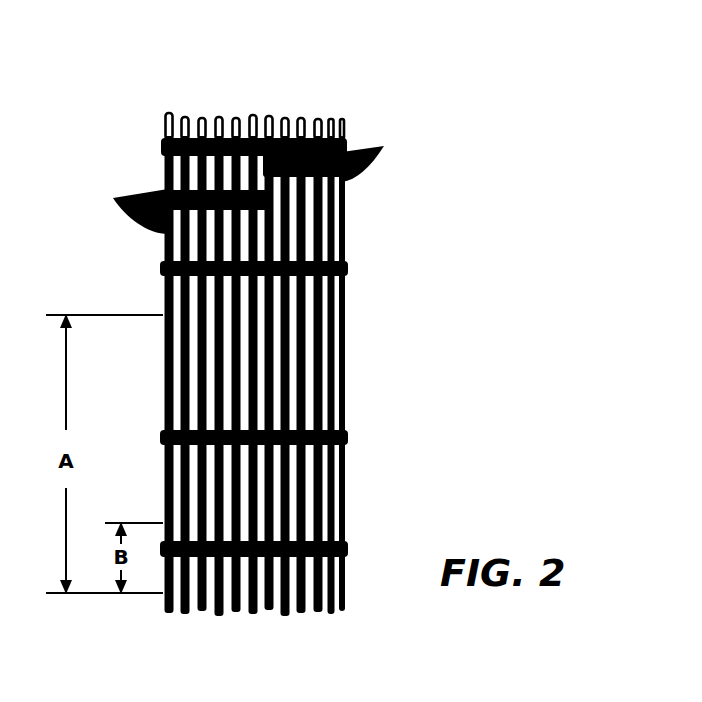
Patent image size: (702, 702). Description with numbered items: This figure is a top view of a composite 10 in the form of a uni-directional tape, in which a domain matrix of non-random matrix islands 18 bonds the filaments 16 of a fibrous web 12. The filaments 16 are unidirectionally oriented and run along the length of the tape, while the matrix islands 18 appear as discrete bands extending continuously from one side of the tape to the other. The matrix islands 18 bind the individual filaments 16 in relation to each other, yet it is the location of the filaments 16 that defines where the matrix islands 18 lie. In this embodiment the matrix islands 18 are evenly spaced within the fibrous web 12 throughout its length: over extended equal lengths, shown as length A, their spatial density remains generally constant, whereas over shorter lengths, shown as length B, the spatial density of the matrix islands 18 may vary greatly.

The composite 10 is at (211, 72).
The fibrous web 12 is at (262, 86).
The filaments 16 is at (108, 190).
The matrix islands 18 is at (334, 108).